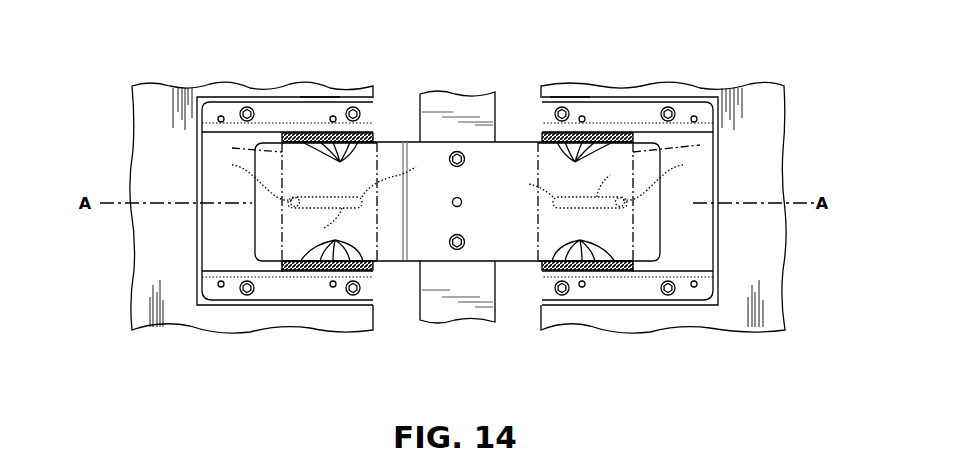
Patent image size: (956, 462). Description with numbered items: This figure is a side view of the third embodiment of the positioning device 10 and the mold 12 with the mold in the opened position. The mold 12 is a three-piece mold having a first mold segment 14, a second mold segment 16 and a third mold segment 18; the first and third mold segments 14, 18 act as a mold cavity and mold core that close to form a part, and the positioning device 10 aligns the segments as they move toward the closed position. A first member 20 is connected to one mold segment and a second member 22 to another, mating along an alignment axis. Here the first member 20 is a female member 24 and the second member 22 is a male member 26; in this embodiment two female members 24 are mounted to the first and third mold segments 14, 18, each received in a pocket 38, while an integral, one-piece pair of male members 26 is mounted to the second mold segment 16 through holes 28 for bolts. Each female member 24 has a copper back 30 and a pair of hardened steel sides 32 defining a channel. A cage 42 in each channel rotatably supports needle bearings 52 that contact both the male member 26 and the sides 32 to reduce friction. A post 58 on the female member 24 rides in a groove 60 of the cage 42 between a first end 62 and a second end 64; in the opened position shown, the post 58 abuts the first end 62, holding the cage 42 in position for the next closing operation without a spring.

The positioning device 10 is at (184, 253).
The mold 12 is at (153, 94).
The first mold segment 14 is at (277, 92).
The second mold segment 16 is at (447, 322).
The third mold segment 18 is at (632, 322).
The first member 20 is at (682, 94).
The second member 22 is at (398, 253).
The female member 24 is at (320, 94).
The male member 26 is at (457, 207).
The holes 28 is at (465, 157).
The back 30 is at (437, 202).
The sides 32 is at (457, 201).
The pocket 38 is at (207, 302).
The cage 42 is at (232, 148).
The bearings 52 is at (457, 201).
The post 58 is at (297, 195).
The groove 60 is at (322, 230).
The first end 62 is at (458, 176).
The second end 64 is at (457, 176).